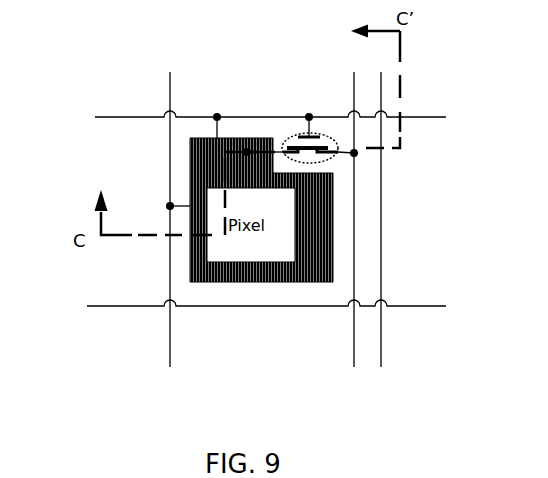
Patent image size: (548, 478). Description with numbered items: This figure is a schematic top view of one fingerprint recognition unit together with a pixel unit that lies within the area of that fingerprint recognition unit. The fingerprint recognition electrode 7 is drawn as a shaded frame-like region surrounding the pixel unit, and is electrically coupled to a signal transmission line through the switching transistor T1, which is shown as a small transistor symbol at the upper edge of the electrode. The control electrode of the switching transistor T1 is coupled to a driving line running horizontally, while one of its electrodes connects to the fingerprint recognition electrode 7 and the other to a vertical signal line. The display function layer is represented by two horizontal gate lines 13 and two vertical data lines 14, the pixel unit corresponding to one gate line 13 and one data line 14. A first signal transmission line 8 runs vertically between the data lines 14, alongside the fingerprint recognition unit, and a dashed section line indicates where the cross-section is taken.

The gate line 13 is at (106, 114).
The data line 14 is at (173, 346).
The first signal transmission line 8 is at (350, 347).
The fingerprint recognition electrode 7 is at (333, 234).
The switching transistor T1 is at (291, 128).